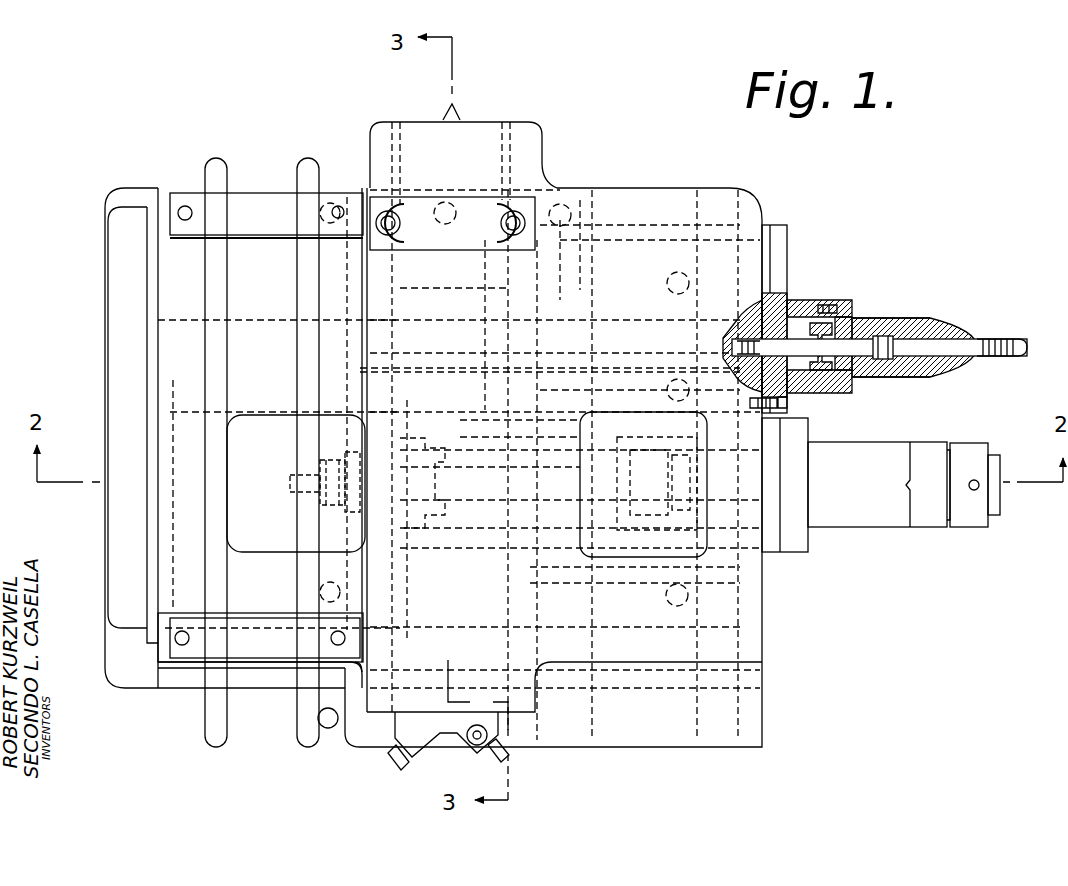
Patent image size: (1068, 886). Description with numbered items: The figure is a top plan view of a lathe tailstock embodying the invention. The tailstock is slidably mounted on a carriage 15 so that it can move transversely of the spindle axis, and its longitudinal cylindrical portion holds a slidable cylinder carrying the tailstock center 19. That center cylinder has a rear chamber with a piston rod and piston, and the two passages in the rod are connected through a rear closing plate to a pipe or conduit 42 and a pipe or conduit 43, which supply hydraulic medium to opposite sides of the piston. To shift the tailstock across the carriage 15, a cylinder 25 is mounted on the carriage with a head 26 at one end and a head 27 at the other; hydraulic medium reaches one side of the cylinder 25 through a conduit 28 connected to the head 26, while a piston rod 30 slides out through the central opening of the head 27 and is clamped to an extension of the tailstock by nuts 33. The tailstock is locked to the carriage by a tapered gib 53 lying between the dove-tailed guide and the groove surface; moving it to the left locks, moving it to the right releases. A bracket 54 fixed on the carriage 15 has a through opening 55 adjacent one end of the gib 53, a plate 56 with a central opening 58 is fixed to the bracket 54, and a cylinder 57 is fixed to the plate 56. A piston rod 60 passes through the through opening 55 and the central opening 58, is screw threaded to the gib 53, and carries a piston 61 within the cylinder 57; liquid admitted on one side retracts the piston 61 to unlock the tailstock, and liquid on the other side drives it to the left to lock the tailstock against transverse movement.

The carriage 15 is at (790, 375).
The tailstock center 19 is at (456, 110).
The cylinder 25 is at (880, 518).
The head 26 is at (998, 470).
The head 27 is at (675, 520).
The conduit 28 is at (974, 492).
The piston rod 30 is at (478, 490).
The nuts 33 is at (340, 500).
The conduit 42 is at (400, 768).
The conduit 43 is at (510, 745).
The gib 53 is at (762, 297).
The bracket 54 is at (810, 310).
The through opening 55 is at (792, 325).
The plate 56 is at (855, 385).
The cylinder 57 is at (912, 320).
The central opening 58 is at (880, 332).
The piston rod 60 is at (845, 345).
The piston 61 is at (950, 332).